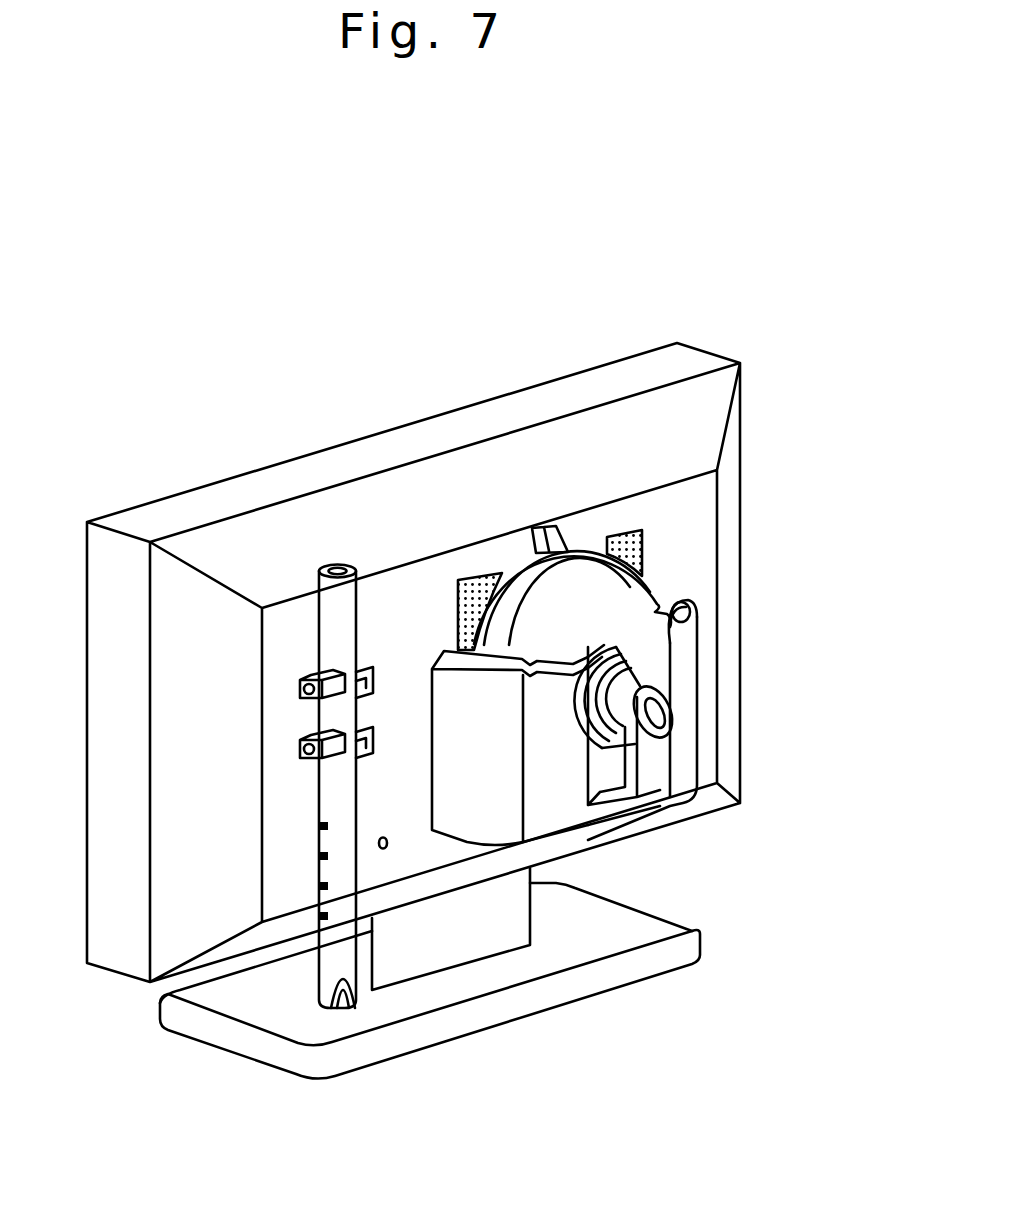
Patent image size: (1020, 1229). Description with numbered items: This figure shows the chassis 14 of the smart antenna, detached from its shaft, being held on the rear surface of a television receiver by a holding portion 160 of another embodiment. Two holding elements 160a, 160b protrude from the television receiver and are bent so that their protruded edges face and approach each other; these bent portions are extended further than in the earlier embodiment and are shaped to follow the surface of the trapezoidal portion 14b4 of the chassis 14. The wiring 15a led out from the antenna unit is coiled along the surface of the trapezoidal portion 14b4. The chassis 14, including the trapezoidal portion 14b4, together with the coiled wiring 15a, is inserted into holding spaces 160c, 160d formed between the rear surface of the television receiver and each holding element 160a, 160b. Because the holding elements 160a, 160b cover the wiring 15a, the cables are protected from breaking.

The chassis 14 is at (546, 481).
The trapezoidal portion 14b4 is at (600, 637).
The wiring 15a is at (647, 743).
The holding portion 160 is at (587, 692).
The holding element 160a is at (487, 803).
The holding element 160b is at (683, 695).
The holding space 160c is at (470, 640).
The holding space 160d is at (662, 597).